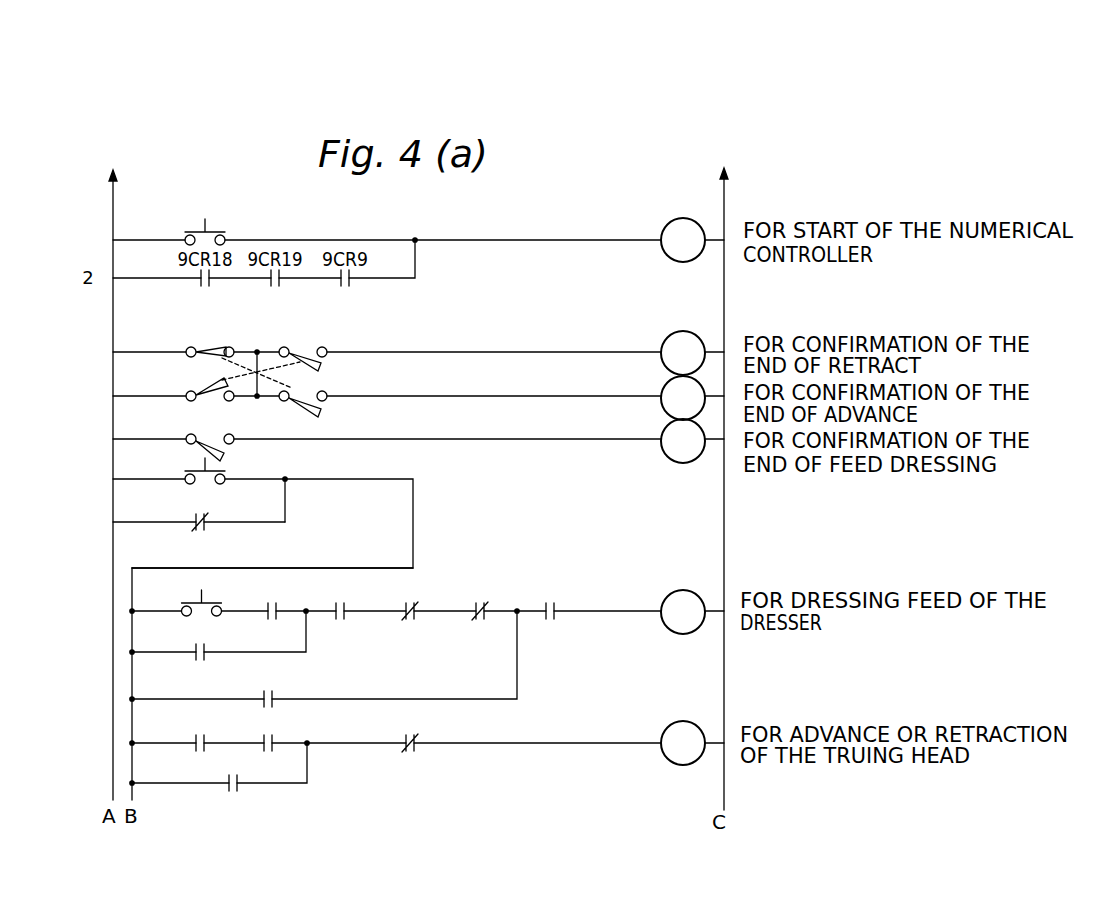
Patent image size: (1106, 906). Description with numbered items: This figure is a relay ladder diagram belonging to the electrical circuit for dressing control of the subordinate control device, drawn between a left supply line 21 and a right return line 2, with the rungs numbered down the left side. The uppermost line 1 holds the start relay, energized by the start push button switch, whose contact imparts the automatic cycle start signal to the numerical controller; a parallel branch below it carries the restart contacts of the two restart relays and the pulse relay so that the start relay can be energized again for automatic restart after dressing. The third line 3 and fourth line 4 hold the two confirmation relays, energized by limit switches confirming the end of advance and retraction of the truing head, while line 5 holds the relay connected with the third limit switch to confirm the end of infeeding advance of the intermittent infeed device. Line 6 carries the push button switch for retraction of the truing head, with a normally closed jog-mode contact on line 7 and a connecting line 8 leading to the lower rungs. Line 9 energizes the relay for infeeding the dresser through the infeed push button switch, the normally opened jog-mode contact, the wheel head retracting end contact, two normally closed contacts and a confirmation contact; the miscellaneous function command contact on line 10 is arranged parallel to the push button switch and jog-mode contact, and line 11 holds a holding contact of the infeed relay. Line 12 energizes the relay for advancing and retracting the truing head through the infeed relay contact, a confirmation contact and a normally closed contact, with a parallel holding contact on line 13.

The power supply line 21 is at (111, 471).
The return line 2 is at (726, 474).
The circuit line 1 (numerical controller start) 1 is at (403, 237).
The circuit line 3 (retract end confirmation) 3 is at (403, 359).
The circuit line 4 (advance end confirmation) 4 is at (403, 392).
The circuit line 5 (feed dressing end confirmation) 5 is at (403, 434).
The circuit line 6 is at (247, 511).
The circuit line 7 is at (183, 511).
The circuit line 8 is at (247, 567).
The circuit line 9 (dressing feed) 9 is at (403, 605).
The circuit line 10 is at (191, 636).
The circuit line 11 is at (297, 660).
The circuit line 12 (advance/retraction of truing head) 12 is at (400, 737).
The circuit line 13 is at (192, 768).